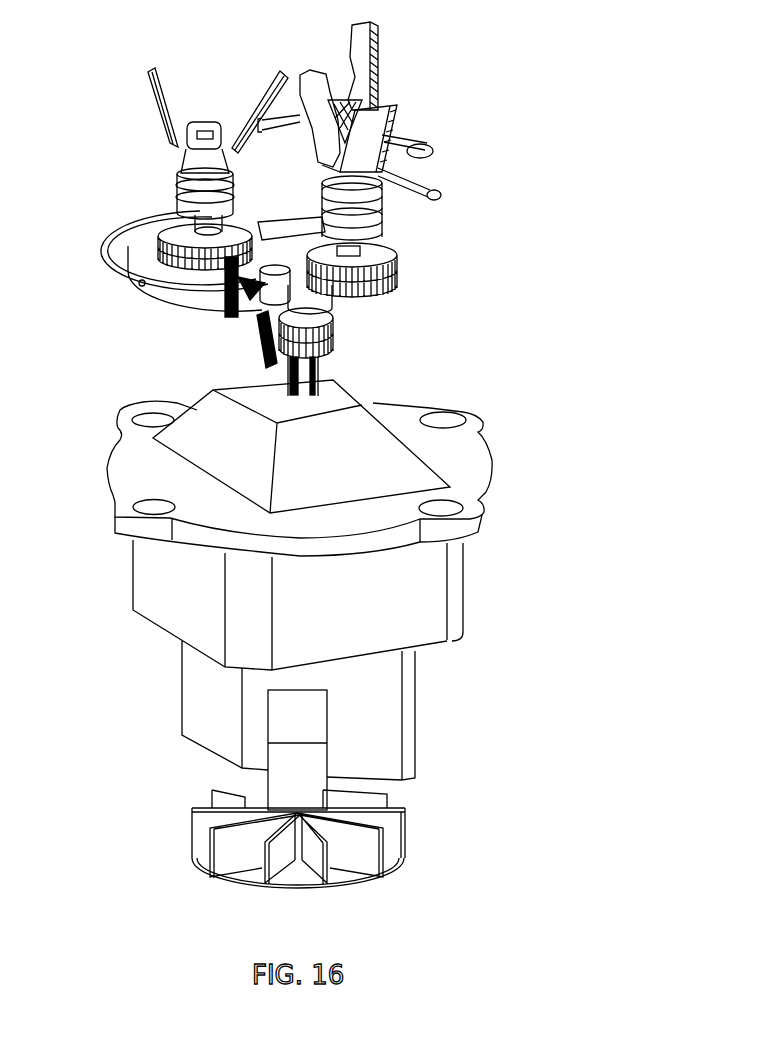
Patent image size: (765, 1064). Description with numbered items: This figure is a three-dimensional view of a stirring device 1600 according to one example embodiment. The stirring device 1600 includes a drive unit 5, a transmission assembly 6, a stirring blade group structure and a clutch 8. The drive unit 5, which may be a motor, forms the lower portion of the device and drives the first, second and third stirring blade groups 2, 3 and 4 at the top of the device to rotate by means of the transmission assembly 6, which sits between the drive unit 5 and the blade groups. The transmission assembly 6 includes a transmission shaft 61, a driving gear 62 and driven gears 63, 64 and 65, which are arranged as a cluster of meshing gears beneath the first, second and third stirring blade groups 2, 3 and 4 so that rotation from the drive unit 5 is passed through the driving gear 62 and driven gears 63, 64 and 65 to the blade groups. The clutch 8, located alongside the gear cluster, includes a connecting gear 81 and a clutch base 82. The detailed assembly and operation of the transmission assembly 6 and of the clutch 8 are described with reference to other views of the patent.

The stirring device 1600 is at (369, 446).
The first stirring blade group 2 is at (383, 82).
The second stirring blade group 3 is at (441, 190).
The third stirring blade group 4 is at (210, 117).
The drive unit 5 is at (463, 572).
The transmission assembly 6 is at (307, 257).
The transmission shaft 61 is at (327, 327).
The driving gear 62 is at (400, 270).
The driven gear 63 is at (393, 217).
The driven gear 64 is at (380, 293).
The driven gear 65 is at (170, 213).
The clutch 8 is at (175, 324).
The connecting gear 81 is at (245, 348).
The clutch base 82 is at (258, 340).